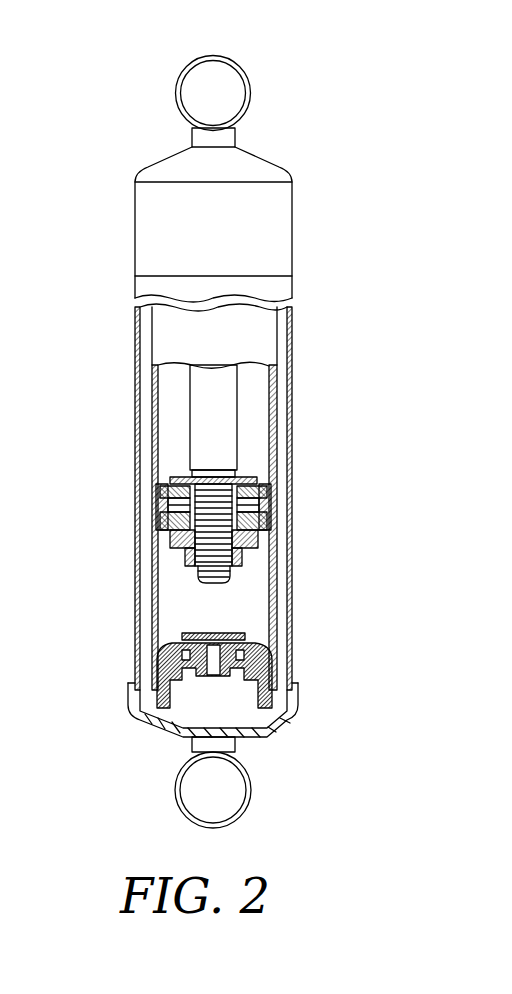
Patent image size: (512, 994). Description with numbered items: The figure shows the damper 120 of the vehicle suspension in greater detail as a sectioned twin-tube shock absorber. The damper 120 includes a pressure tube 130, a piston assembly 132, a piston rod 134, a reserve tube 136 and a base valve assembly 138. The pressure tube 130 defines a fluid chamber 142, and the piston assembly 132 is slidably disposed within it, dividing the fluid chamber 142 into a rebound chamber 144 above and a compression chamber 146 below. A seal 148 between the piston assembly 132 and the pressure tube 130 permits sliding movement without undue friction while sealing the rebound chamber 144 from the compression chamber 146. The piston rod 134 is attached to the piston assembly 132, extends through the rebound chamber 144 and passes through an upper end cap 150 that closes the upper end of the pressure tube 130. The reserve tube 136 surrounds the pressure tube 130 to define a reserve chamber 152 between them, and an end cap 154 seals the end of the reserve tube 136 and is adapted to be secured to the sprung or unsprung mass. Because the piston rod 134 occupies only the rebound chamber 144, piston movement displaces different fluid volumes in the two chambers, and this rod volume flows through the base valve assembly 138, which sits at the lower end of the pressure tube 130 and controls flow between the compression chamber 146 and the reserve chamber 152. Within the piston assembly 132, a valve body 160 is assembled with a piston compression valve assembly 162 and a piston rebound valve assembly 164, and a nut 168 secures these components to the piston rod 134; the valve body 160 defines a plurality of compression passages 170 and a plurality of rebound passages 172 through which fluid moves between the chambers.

The damper 120 is at (400, 86).
The upper end cap 150 is at (265, 158).
The pressure tube 130 is at (290, 382).
The piston assembly 132 is at (262, 600).
The piston rod 134 is at (228, 423).
The reserve tube 136 is at (290, 618).
The base valve assembly 138 is at (201, 704).
The fluid chamber 142 is at (228, 625).
The rebound chamber 144 is at (252, 432).
The compression chamber 146 is at (173, 586).
The seal 148 is at (158, 512).
The reserve chamber 152 is at (139, 402).
The end cap 154 is at (133, 704).
The valve body 160 is at (160, 481).
The piston compression valve assembly 162 is at (165, 481).
The piston rebound valve assembly 164 is at (176, 564).
The nut 168 is at (244, 552).
The compression passages 170 is at (158, 497).
The rebound passages 172 is at (263, 495).